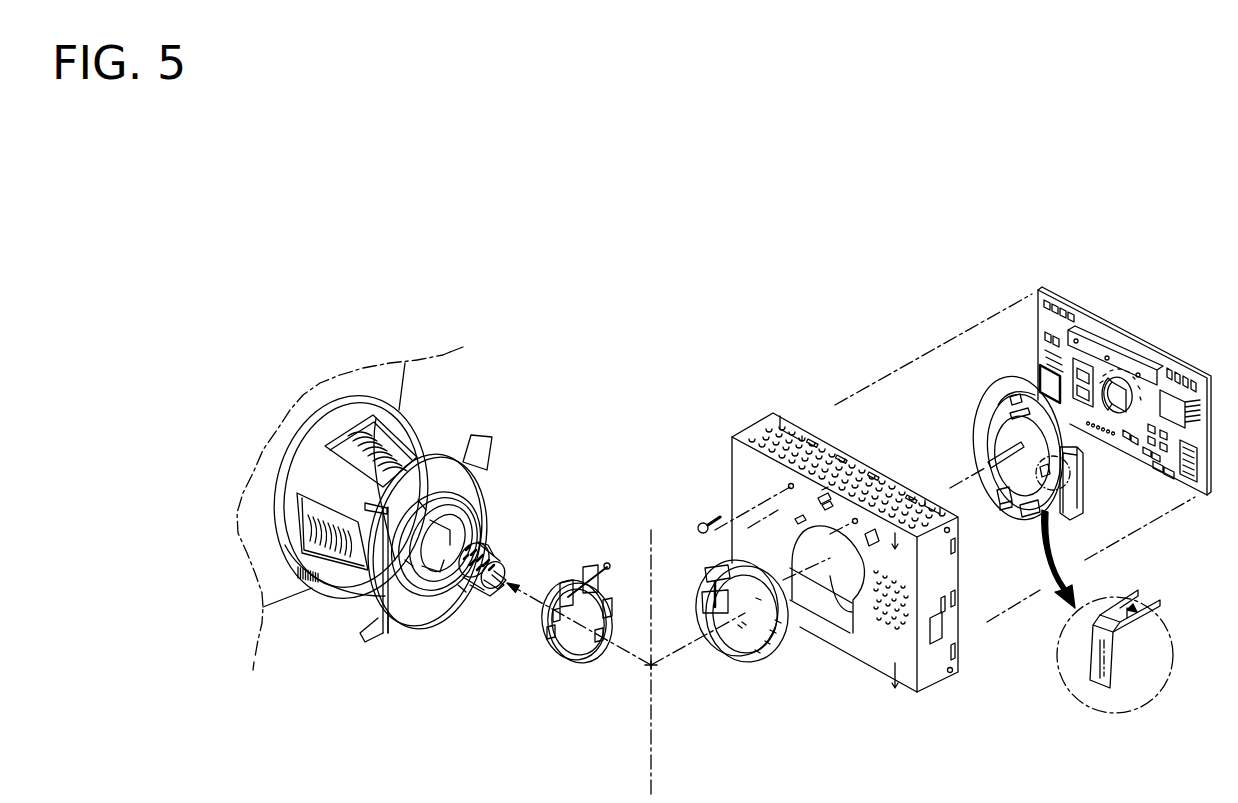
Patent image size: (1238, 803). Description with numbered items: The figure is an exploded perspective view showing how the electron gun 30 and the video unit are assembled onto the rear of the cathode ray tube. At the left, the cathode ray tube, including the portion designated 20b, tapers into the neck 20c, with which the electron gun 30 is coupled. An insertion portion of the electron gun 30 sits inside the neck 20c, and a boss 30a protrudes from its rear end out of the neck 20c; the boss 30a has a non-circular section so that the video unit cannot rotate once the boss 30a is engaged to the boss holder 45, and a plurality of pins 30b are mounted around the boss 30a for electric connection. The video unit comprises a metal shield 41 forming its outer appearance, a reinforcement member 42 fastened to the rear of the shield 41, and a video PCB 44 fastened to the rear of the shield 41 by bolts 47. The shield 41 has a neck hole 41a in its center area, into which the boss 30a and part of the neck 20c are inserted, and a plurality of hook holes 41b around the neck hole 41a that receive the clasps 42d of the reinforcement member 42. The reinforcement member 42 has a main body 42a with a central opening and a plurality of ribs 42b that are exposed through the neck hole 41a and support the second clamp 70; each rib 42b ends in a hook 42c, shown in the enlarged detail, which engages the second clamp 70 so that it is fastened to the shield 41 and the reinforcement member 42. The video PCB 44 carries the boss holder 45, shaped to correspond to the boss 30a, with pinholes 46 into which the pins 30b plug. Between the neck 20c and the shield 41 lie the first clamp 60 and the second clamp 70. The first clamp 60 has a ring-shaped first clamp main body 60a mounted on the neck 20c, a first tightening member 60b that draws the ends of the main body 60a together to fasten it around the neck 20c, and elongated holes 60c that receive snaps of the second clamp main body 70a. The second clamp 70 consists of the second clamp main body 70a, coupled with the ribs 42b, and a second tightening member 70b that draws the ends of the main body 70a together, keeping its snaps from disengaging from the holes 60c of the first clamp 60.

The reflector 20b is at (405, 372).
The neck 20c is at (462, 512).
The electron gun 30 is at (471, 598).
The boss 30a is at (508, 570).
The pins 30b is at (486, 545).
The shield 41 is at (754, 408).
The neck hole 41a is at (852, 625).
The hook holes 41b is at (827, 506).
The reinforcement member 42 is at (989, 388).
The main body 42a is at (1020, 510).
The ribs 42b is at (993, 458).
The hook 42c is at (1105, 690).
The clasps 42d is at (1010, 385).
The video PCB 44 is at (1057, 293).
The boss holder 45 is at (1108, 418).
The pinholes 46 is at (1120, 372).
The bolts 47 is at (702, 524).
The first clamp 60 is at (556, 672).
The first clamp main body 60a is at (590, 655).
The first tightening member 60b is at (605, 565).
The holes 60c is at (556, 628).
The second clamp 70 is at (741, 675).
The second clamp main body 70a is at (720, 648).
The second tightening member 70b is at (708, 588).